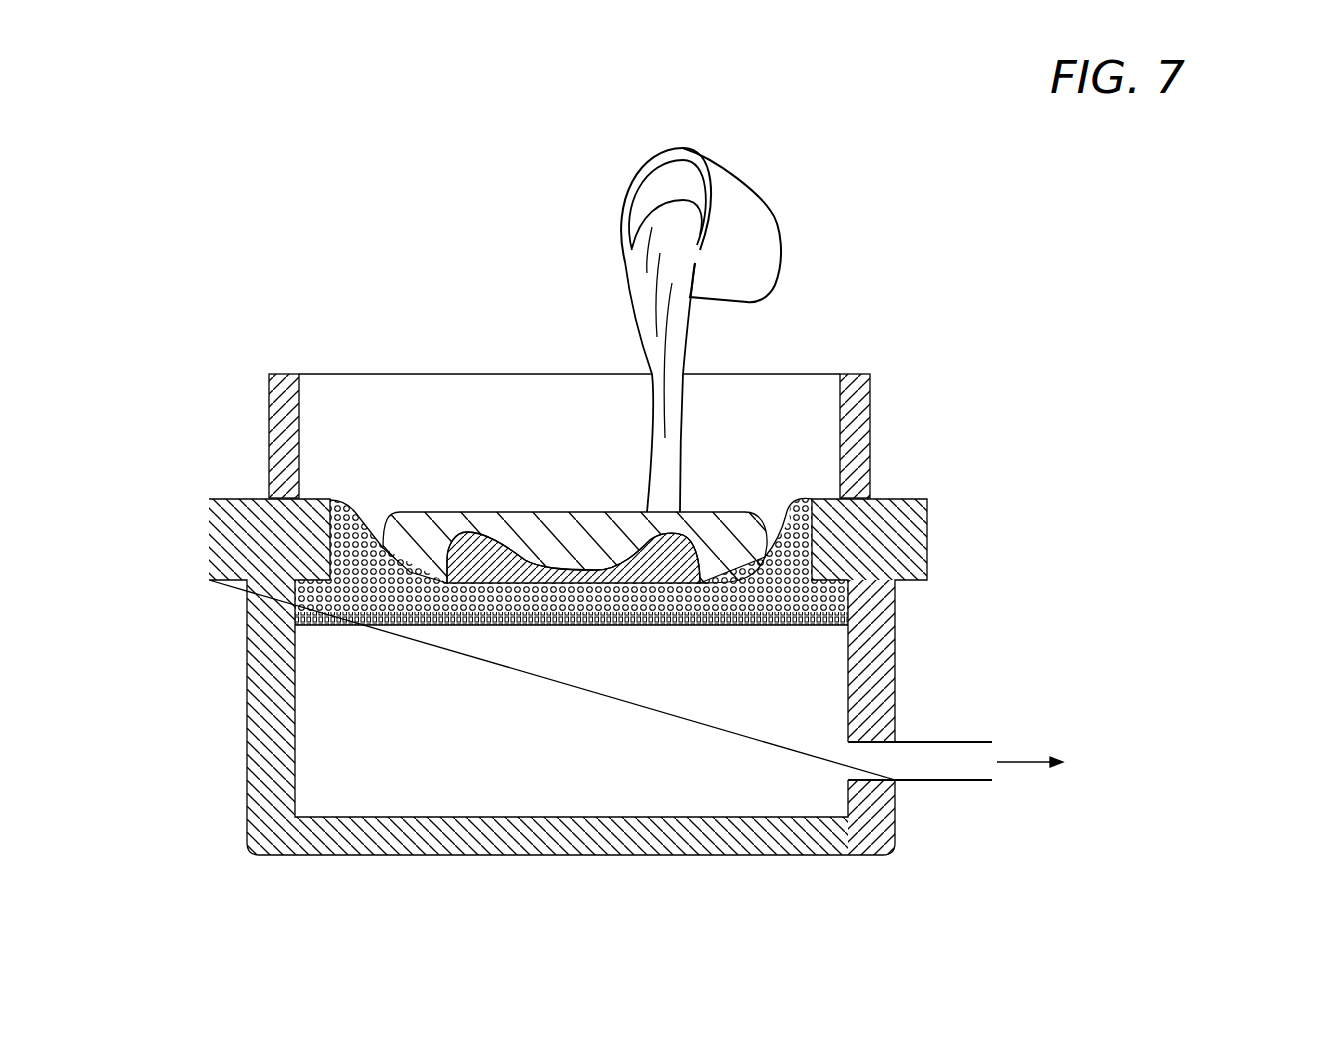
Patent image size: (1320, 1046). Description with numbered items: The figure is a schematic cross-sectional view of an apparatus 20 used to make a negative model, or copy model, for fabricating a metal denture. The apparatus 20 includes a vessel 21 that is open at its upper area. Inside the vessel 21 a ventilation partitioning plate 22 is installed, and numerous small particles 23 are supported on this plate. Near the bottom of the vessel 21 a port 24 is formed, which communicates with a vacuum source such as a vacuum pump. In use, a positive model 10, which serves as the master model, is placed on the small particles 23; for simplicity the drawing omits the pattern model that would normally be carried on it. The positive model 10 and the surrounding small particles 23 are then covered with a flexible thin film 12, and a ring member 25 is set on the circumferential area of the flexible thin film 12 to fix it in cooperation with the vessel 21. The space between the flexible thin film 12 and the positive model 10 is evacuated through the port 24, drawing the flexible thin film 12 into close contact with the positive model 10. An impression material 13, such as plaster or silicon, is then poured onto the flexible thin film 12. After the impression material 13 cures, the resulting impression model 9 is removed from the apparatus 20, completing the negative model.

The impression model 9 is at (420, 518).
The positive model 10 is at (590, 625).
The flexible thin film 12 is at (827, 501).
The impression material 13 is at (653, 313).
The apparatus 20 is at (712, 533).
The vessel 21 is at (363, 855).
The ventilation partitioning plate 22 is at (507, 625).
The small particles 23 is at (293, 600).
The port 24 is at (930, 781).
The ring member 25 is at (283, 440).